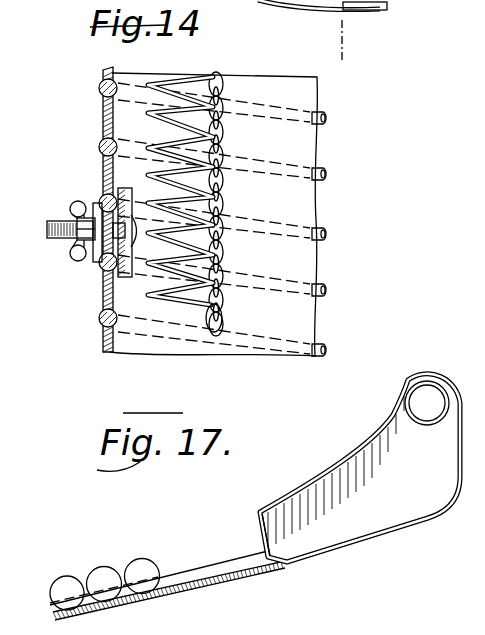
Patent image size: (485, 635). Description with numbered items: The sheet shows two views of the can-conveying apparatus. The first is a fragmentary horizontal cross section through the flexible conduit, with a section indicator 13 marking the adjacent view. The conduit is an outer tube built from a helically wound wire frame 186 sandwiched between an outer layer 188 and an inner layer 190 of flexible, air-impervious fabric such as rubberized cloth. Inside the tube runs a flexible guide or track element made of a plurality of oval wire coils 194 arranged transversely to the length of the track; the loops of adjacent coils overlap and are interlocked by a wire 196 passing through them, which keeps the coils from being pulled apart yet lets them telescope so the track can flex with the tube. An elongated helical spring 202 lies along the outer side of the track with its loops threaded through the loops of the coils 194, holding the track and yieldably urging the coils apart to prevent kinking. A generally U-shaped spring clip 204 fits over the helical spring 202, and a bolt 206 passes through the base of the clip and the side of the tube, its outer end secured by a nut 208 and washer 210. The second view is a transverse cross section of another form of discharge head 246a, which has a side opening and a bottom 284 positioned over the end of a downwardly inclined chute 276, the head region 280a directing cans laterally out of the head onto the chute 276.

In FIG. 14, the section line 13 is at (320, 41).
In FIG. 14, the helically wound wire frame 186 is at (318, 112).
In FIG. 14, the outer layer of flexible fabric 188 is at (100, 110).
In FIG. 14, the inner layer of flexible fabric 190 is at (110, 72).
In FIG. 14, the oval wire coils 194 is at (282, 54).
In FIG. 14, the wire 196 is at (233, 155).
In FIG. 14, the helical spring 202 is at (163, 90).
In FIG. 14, the U-shaped spring clip 204 is at (148, 277).
In FIG. 14, the bolt 206 is at (60, 222).
In FIG. 14, the nut 208 is at (82, 262).
In FIG. 14, the washer 210 is at (97, 157).
In FIG. 17, the discharge head 246a is at (337, 460).
In FIG. 17, the chute 276 is at (170, 587).
In FIG. 17, the deflector lip 280a is at (275, 505).
In FIG. 17, the bottom 284 is at (318, 550).